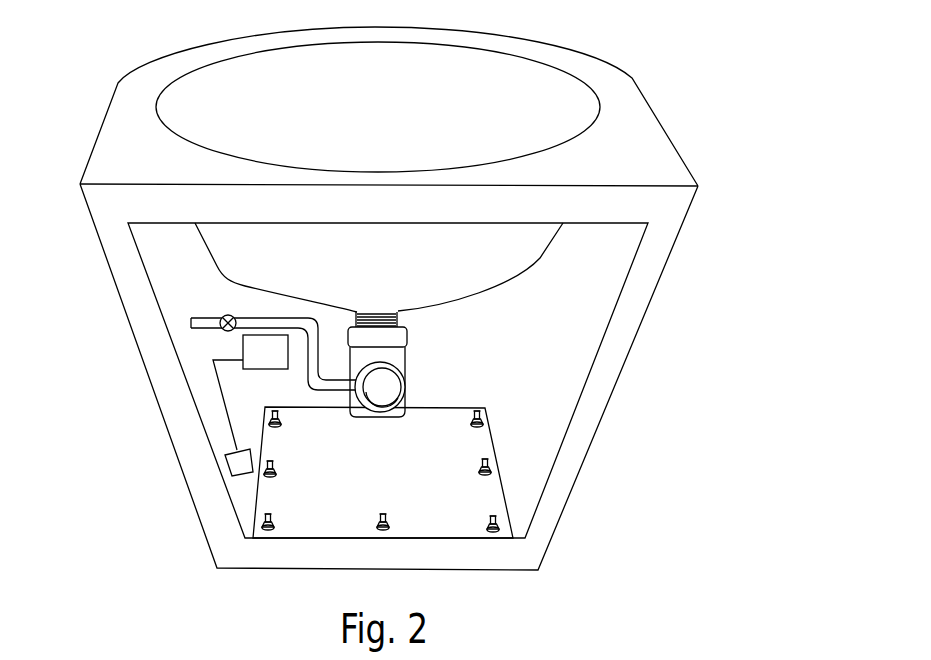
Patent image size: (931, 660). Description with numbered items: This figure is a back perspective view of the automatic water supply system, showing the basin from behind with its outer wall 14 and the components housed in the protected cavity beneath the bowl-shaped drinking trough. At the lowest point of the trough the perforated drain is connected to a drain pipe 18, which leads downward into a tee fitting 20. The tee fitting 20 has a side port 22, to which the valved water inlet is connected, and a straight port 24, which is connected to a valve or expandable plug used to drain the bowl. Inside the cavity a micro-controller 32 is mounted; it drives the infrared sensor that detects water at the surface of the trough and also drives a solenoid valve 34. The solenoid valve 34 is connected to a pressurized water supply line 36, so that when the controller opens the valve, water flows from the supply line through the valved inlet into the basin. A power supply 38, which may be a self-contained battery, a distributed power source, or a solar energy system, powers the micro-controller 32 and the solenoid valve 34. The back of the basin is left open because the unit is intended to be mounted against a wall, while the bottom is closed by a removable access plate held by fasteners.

The outer wall 14 is at (625, 140).
The drain pipe 18 is at (407, 316).
The tee fitting 20 is at (407, 380).
The side port 22 is at (407, 353).
The straight port 24 is at (390, 420).
The micro-controller 32 is at (243, 351).
The solenoid valve 34 is at (226, 314).
The pressurized water supply line 36 is at (192, 329).
The power supply 38 is at (227, 468).